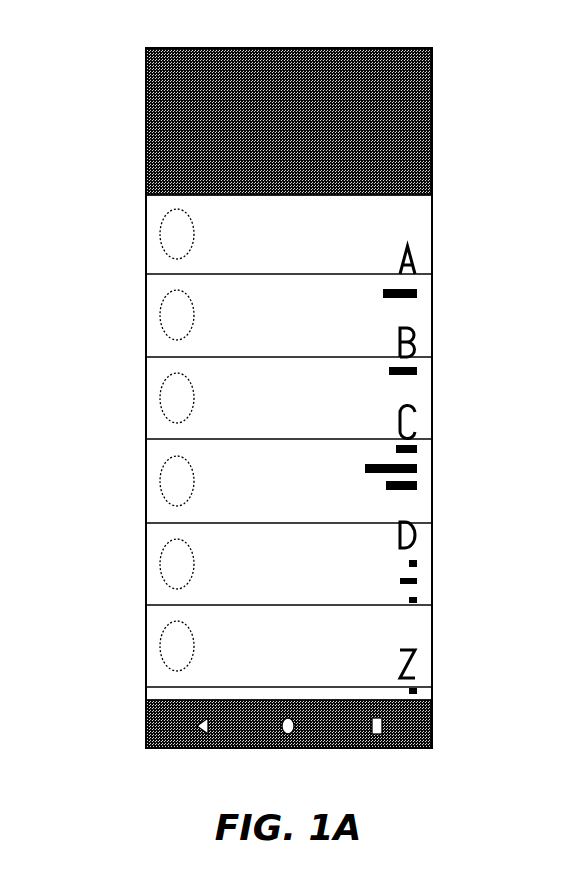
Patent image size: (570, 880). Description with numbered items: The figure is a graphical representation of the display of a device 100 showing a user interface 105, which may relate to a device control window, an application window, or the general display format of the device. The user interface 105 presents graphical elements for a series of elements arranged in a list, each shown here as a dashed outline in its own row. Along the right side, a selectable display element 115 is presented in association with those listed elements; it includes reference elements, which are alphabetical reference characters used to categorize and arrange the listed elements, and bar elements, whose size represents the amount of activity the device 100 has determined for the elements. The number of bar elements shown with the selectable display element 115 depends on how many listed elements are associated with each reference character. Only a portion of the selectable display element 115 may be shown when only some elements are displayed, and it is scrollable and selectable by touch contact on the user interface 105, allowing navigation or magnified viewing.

The device 100 is at (116, 111).
The user interface 105 is at (371, 208).
The selectable display element 115 is at (436, 335).